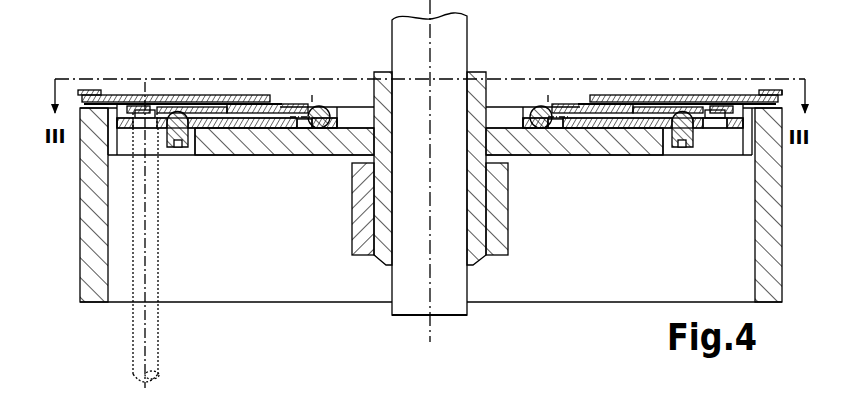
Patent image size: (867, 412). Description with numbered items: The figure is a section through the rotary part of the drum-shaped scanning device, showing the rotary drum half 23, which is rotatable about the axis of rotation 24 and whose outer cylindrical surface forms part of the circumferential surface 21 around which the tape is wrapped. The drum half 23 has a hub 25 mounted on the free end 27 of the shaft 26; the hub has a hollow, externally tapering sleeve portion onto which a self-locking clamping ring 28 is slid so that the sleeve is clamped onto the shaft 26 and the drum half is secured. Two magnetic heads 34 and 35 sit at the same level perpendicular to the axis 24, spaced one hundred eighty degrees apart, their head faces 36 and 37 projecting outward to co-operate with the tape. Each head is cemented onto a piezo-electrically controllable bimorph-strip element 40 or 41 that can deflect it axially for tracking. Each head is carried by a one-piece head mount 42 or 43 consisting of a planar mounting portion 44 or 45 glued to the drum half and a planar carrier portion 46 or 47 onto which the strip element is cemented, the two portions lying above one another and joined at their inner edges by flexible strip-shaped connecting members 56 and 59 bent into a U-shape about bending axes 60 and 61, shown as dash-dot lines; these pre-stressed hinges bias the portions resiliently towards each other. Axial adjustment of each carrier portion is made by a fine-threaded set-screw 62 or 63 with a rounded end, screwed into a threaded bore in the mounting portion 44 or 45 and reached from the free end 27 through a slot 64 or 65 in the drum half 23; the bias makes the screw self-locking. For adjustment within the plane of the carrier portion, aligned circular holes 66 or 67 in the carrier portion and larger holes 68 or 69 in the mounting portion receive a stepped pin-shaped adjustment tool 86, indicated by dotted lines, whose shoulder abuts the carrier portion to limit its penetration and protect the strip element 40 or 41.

The circumferential surface 21 is at (79, 250).
The rotary drum half 23 is at (570, 267).
The axis of rotation 24 is at (432, 325).
The hub 25 is at (382, 120).
The shaft 26 is at (457, 38).
The free end of the shaft 27 is at (412, 316).
The self-locking clamping ring 28 is at (355, 232).
The magnetic head 34 is at (100, 96).
The magnetic head 35 is at (765, 91).
The head face 36 is at (83, 91).
The head face 37 is at (784, 93).
The bimorph-strip element 40 is at (118, 96).
The bimorph-strip element 41 is at (740, 96).
The head mount 42 is at (285, 96).
The head mount 43 is at (576, 96).
The mounting portion 44 is at (245, 128).
The mounting portion 45 is at (600, 128).
The carrier portion 46 is at (238, 103).
The carrier portion 47 is at (627, 105).
The connecting member 56 is at (322, 108).
The connecting member 59 is at (540, 108).
The bending axis 60 is at (326, 129).
The bending axis 61 is at (547, 129).
The set-screw 62 is at (185, 148).
The set-screw 63 is at (687, 148).
The slot 64 is at (196, 150).
The slot 65 is at (664, 150).
The circular hole 66 is at (148, 107).
The circular hole 67 is at (712, 107).
The circular hole 68 is at (141, 129).
The circular hole 69 is at (713, 129).
The pin-shaped adjustment tool 86 is at (160, 319).